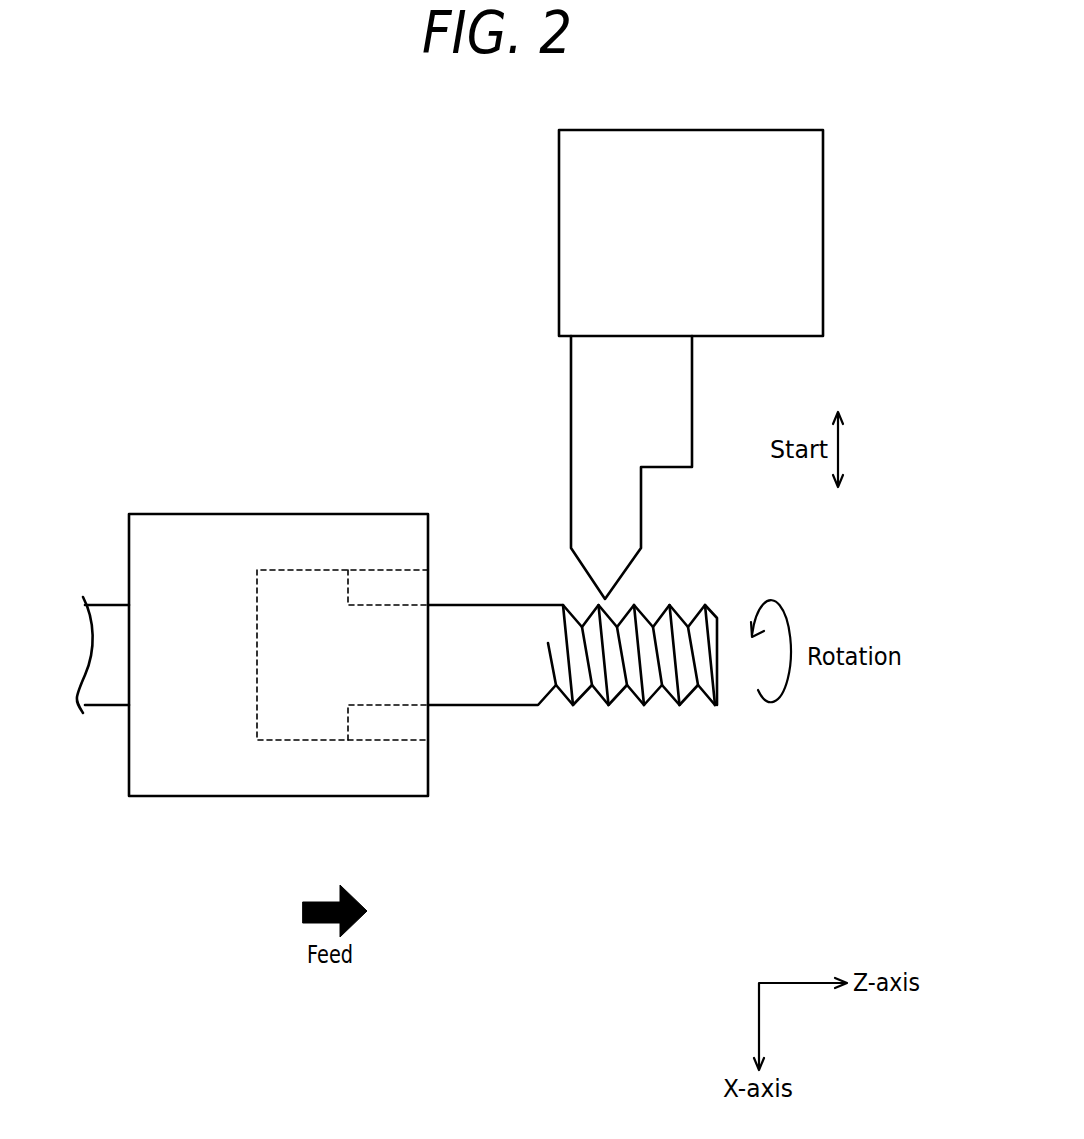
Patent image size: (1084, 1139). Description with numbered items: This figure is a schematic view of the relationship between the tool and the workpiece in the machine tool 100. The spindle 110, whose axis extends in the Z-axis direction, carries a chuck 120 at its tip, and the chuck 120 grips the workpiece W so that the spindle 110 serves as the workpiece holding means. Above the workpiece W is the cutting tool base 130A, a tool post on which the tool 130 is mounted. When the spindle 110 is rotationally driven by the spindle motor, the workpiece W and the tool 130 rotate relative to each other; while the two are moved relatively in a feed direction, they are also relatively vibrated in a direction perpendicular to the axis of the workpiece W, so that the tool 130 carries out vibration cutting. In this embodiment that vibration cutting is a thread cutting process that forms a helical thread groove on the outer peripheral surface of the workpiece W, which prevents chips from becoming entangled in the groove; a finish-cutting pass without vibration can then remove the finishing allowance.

The machine tool 100 is at (309, 404).
The spindle 110 is at (108, 617).
The chuck 120 is at (256, 537).
The tool 130 is at (621, 518).
The cutting tool base 130A is at (783, 266).
The workpiece W is at (598, 705).